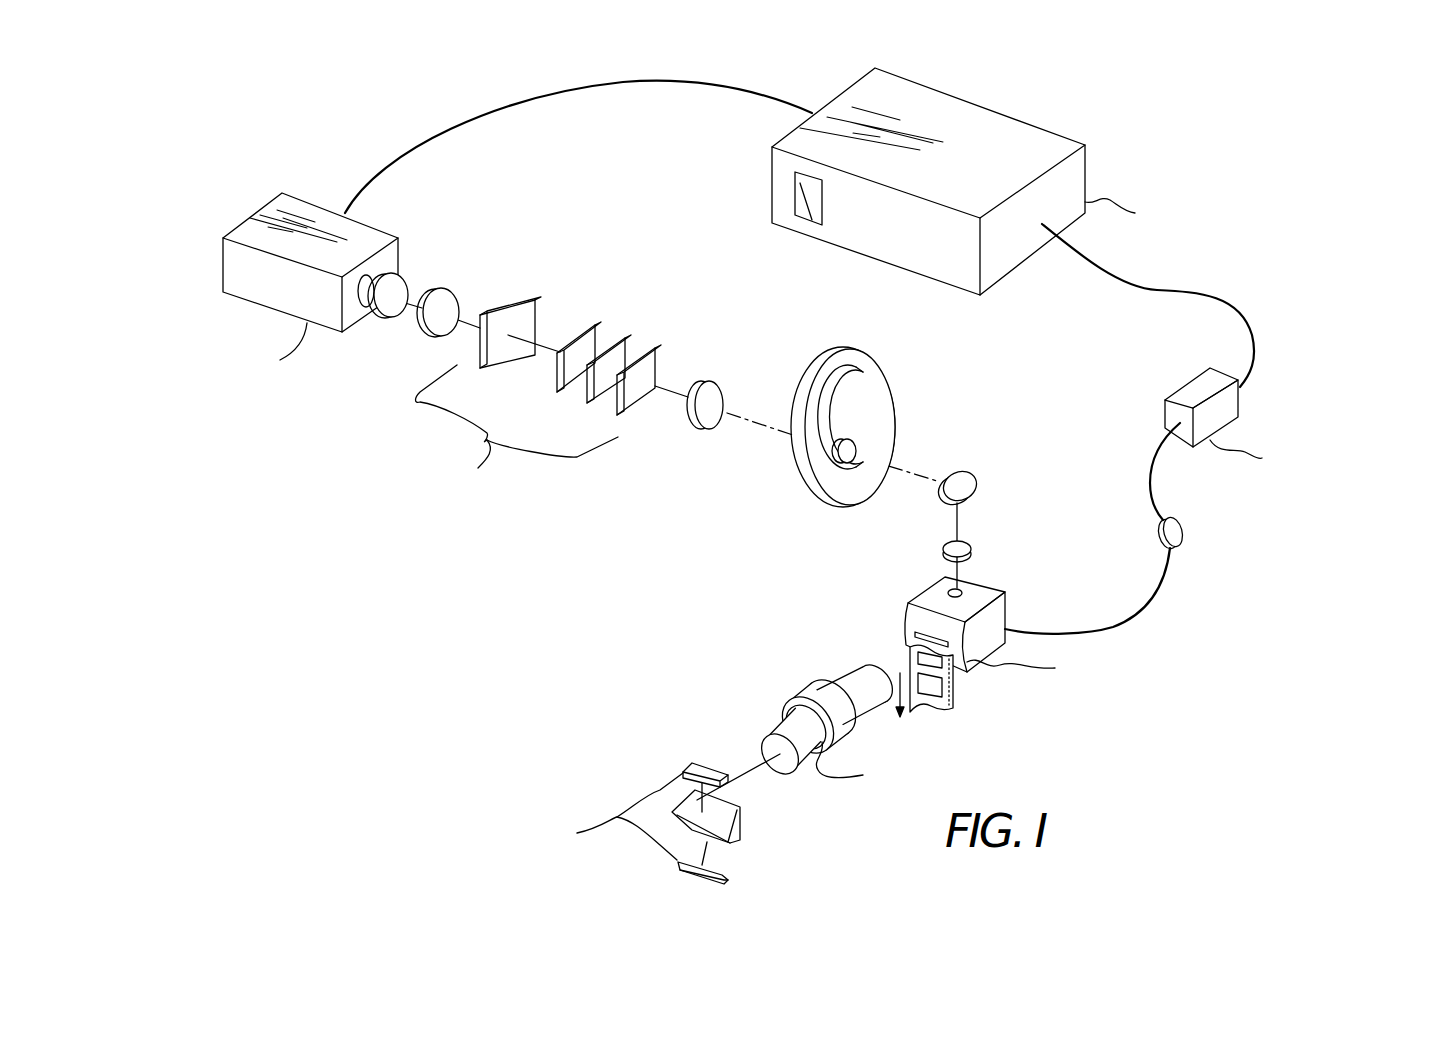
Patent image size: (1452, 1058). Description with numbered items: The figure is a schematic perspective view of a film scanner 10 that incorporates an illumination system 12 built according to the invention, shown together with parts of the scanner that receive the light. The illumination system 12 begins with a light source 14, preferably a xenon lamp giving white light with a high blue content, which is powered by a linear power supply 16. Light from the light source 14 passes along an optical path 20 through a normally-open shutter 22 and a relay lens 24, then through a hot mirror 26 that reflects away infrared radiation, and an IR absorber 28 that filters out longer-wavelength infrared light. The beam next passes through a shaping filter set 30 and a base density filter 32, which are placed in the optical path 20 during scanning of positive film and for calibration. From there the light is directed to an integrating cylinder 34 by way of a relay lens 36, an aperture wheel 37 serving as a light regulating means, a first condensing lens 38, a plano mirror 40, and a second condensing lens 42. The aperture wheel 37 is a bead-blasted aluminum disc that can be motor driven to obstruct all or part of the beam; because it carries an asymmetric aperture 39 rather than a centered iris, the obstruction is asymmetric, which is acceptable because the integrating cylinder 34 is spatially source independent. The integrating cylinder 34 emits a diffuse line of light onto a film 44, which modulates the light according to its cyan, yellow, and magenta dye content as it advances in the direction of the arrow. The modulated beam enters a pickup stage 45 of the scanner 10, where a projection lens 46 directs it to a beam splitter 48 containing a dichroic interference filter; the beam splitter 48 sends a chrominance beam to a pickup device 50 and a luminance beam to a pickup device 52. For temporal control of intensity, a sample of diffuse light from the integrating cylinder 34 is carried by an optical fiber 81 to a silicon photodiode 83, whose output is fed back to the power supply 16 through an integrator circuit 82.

The film scanner 10 is at (1197, 140).
The illumination system 12 is at (649, 277).
The light source 14 is at (377, 217).
The linear power supply 16 is at (983, 104).
The optical path 20 is at (683, 407).
The normally-open shutter 22 is at (402, 273).
The relay lens 24 is at (457, 290).
The hot mirror 26 is at (540, 311).
The IR absorber 28 is at (593, 322).
The shaping filter set 30 is at (640, 330).
The base density filter 32 is at (658, 348).
The integrating cylinder 34 is at (1013, 588).
The relay lens 36 is at (723, 393).
The aperture wheel 37 is at (895, 392).
The first condensing lens 38 is at (856, 453).
The asymmetric aperture 39 is at (863, 372).
The plano mirror 40 is at (977, 487).
The second condensing lens 42 is at (970, 548).
The film 44 is at (953, 688).
The pickup stage 45 is at (732, 672).
The projection lens 46 is at (827, 675).
The beam splitter 48 is at (742, 825).
The pickup device 50 is at (683, 774).
The pickup device 52 is at (680, 867).
The optical fiber 81 is at (1147, 597).
The integrator circuit 82 is at (1240, 418).
The silicon photodiode 83 is at (1182, 533).